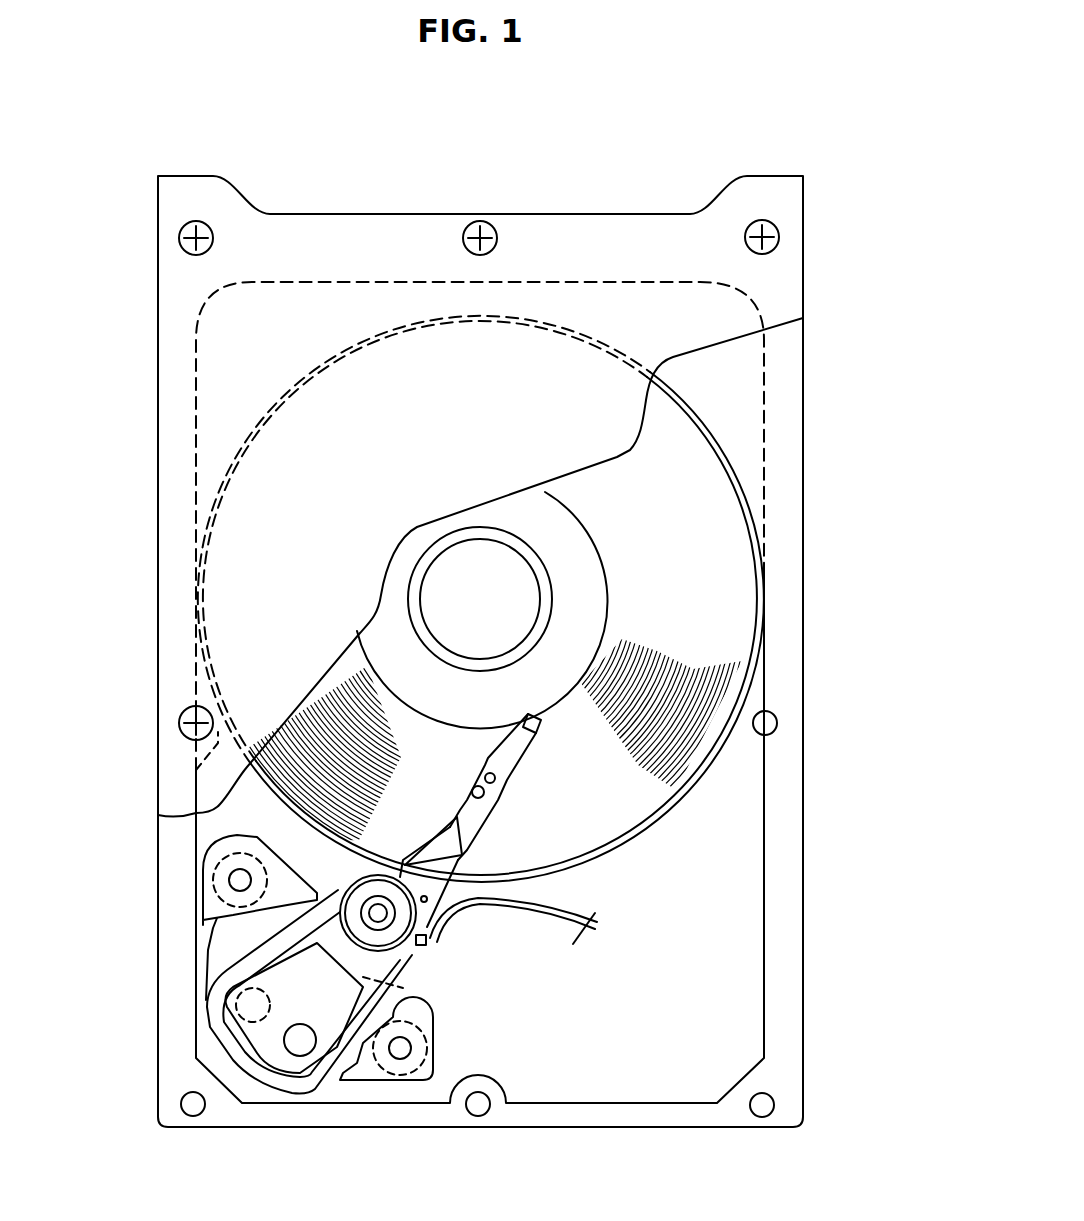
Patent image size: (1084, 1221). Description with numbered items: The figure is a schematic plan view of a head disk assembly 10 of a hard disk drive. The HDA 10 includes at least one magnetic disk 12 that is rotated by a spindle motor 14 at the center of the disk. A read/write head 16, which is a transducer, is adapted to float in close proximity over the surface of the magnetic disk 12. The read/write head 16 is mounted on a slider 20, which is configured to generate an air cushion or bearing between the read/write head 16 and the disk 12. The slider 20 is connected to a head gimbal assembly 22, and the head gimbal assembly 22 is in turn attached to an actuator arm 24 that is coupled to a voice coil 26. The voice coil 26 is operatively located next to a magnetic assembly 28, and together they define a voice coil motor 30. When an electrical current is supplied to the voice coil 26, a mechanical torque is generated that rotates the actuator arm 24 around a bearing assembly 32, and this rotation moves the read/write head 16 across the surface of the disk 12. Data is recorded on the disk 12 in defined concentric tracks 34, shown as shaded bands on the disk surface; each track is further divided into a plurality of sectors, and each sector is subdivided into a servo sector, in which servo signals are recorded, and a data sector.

The head disk assembly 10 is at (652, 149).
The magnetic disk 12 is at (717, 540).
The spindle motor 14 is at (455, 577).
The read/write head 16 is at (534, 726).
The slider 20 is at (515, 750).
The head gimbal assembly 22 is at (479, 835).
The actuator arm 24 is at (297, 930).
The voice coil 26 is at (210, 995).
The magnetic assembly 28 is at (240, 945).
The voice coil motor 30 is at (350, 1062).
The bearing assembly 32 is at (390, 923).
The concentric tracks 34 is at (317, 743).